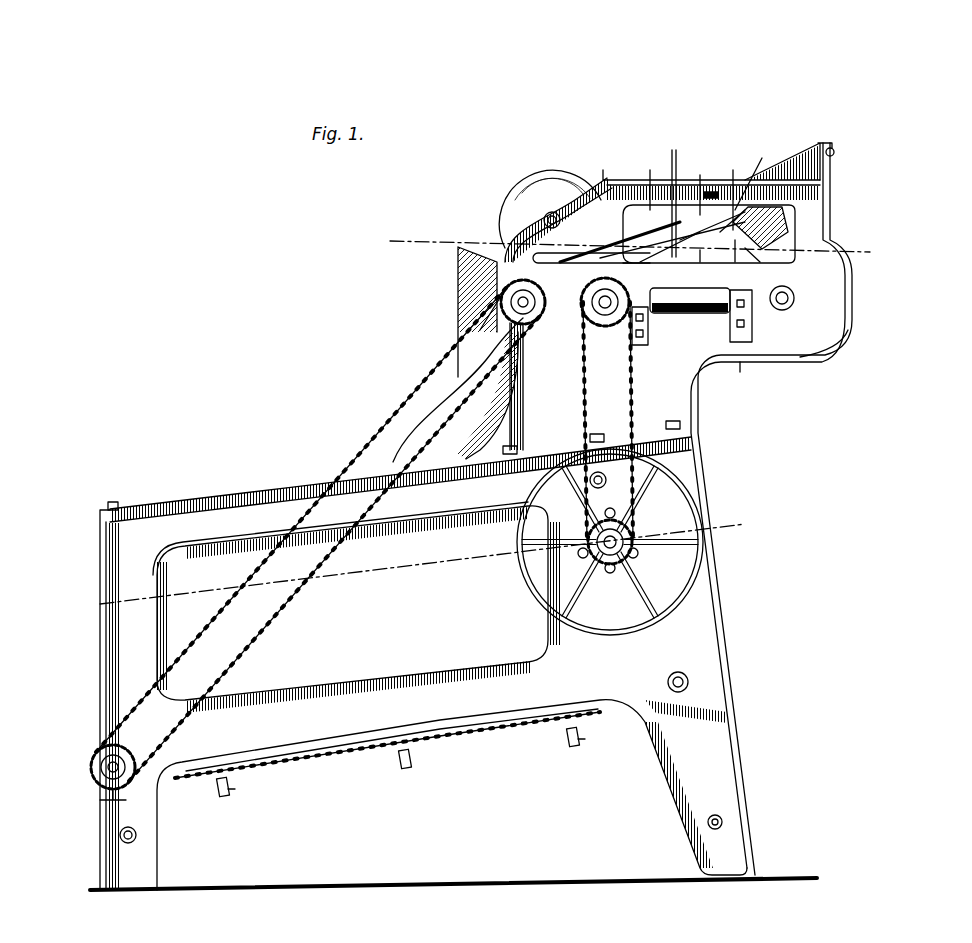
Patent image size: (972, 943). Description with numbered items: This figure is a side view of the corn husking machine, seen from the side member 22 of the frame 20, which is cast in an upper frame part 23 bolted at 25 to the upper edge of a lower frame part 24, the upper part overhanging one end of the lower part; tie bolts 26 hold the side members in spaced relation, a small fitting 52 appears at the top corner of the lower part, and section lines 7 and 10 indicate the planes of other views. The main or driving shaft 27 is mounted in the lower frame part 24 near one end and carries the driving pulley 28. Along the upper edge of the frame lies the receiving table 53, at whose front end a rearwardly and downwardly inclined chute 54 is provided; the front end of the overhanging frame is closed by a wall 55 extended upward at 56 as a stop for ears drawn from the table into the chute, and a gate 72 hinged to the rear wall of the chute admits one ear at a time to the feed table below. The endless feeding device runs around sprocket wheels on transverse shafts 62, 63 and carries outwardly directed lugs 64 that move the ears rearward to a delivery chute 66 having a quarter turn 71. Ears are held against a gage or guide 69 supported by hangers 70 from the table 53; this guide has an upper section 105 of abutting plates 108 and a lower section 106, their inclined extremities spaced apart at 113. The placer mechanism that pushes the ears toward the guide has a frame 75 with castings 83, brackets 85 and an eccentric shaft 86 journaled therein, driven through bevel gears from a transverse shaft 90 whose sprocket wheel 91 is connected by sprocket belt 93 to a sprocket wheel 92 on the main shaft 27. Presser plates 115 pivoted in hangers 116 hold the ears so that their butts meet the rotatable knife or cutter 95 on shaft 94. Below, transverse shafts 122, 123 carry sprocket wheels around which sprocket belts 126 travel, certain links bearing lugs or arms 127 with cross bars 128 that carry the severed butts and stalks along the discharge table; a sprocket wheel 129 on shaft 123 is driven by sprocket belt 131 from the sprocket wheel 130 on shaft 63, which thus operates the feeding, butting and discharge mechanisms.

The section line 7 is at (415, 563).
The section line 10 is at (617, 245).
The frame 20 is at (700, 440).
The side member 22 is at (720, 630).
The upper frame part 23 is at (698, 374).
The lower frame part 24 is at (383, 686).
The securing point 25 is at (517, 446).
The tie bolts 26 is at (590, 484).
The main or driving shaft 27 is at (636, 525).
The driving pulley 28 is at (678, 602).
The corner tab 52 is at (113, 502).
The receiving table 53 is at (711, 207).
The chute 54 is at (785, 212).
The wall 55 is at (832, 346).
The upward extension of wall 56 is at (834, 165).
The shaft 62 is at (794, 296).
The shaft 63 is at (540, 296).
The brackets or outwardly directed lugs 64 is at (687, 259).
The delivery chute 66 is at (466, 297).
The gage or guide 69 is at (731, 247).
The hangers 70 is at (647, 182).
The quarter turn 71 is at (457, 378).
The gate 72 is at (750, 187).
The frame 75 is at (735, 325).
The castings 83 is at (680, 315).
The brackets 85 is at (640, 307).
The shaft 86 is at (746, 305).
The transverse shaft 90 is at (585, 318).
The sprocket wheel 91 is at (606, 316).
The sprocket wheel 92 is at (595, 530).
The sprocket belt 93 is at (580, 381).
The shaft 94 is at (544, 216).
The rotatable knife or cutter 95 is at (568, 172).
The upper section of gage 105 is at (788, 238).
The lower section of gage 106 is at (672, 222).
The abutting plates 108 is at (577, 220).
The space 113 is at (695, 262).
The presser plates 115 is at (674, 191).
The hangers 116 is at (734, 190).
The transverse shaft 122 is at (668, 680).
The transverse shaft 123 is at (118, 795).
The sprocket belt 126 is at (332, 760).
The outstanding lugs or arms 127 is at (216, 790).
The cross bars 128 is at (424, 772).
The sprocket wheel 129 is at (128, 750).
The sprocket wheel 130 is at (498, 330).
The sprocket belt 131 is at (317, 534).